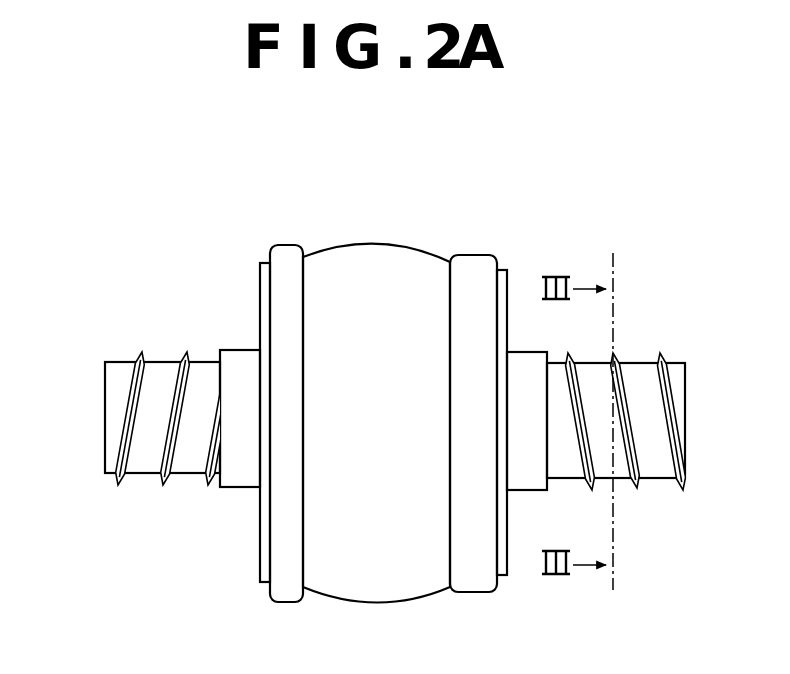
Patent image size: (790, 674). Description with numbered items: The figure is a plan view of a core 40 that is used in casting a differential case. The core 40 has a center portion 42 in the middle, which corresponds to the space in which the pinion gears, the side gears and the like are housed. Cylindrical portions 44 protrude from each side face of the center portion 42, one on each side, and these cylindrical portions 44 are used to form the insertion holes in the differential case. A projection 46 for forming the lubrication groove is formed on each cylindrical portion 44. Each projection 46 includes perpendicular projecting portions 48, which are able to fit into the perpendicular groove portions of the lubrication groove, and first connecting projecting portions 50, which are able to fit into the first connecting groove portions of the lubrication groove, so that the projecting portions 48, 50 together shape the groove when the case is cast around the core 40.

The core 40 is at (496, 168).
The center portion 42 is at (385, 277).
The cylindrical portion 44 is at (163, 382).
The projection 46 is at (112, 427).
The perpendicular projecting portion 48 is at (140, 368).
The first connecting projecting portion 50 is at (128, 412).